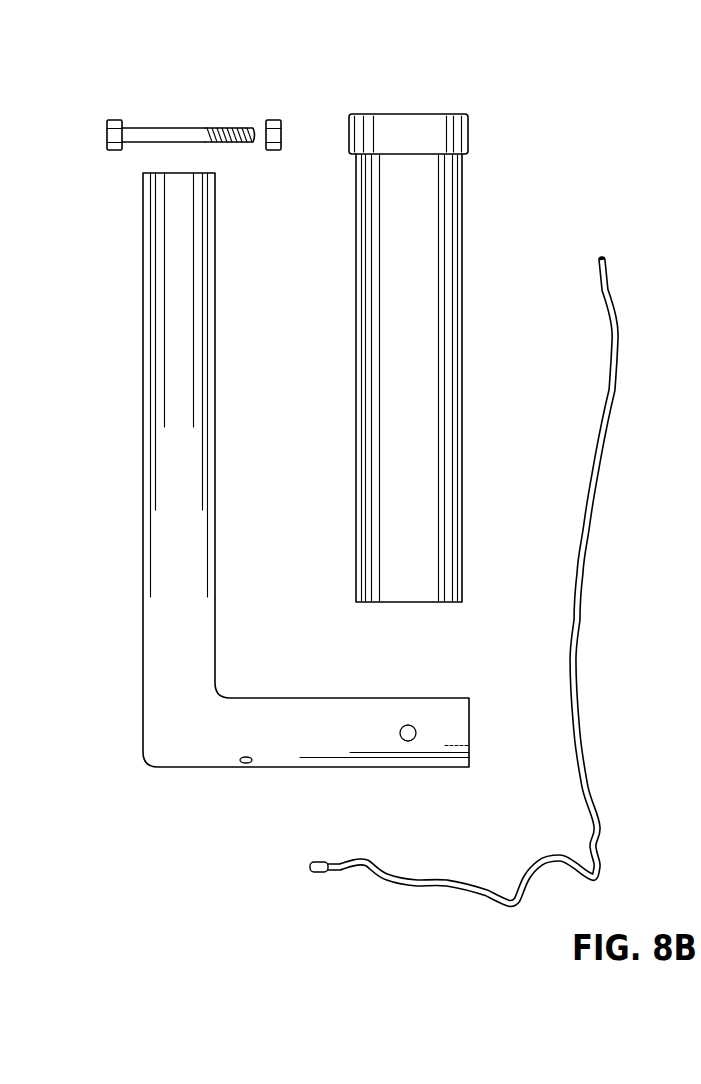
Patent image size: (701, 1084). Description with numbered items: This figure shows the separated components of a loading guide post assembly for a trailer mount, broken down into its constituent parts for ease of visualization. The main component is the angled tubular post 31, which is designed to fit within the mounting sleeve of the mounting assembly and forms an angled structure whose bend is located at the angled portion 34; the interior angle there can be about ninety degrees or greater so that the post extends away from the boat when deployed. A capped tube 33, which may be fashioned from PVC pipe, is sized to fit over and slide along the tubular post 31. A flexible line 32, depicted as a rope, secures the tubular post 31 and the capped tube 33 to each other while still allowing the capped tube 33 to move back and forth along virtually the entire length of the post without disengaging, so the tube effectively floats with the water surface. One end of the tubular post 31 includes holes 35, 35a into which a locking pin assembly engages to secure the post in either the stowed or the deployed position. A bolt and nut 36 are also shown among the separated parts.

The angled tubular post 31 is at (143, 513).
The flexible line 32 is at (273, 120).
The capped tube 33 is at (463, 335).
The angled portion 34 is at (137, 766).
The hole 35 is at (247, 766).
The second set of holes 35a is at (408, 724).
The bolt 36 is at (160, 127).